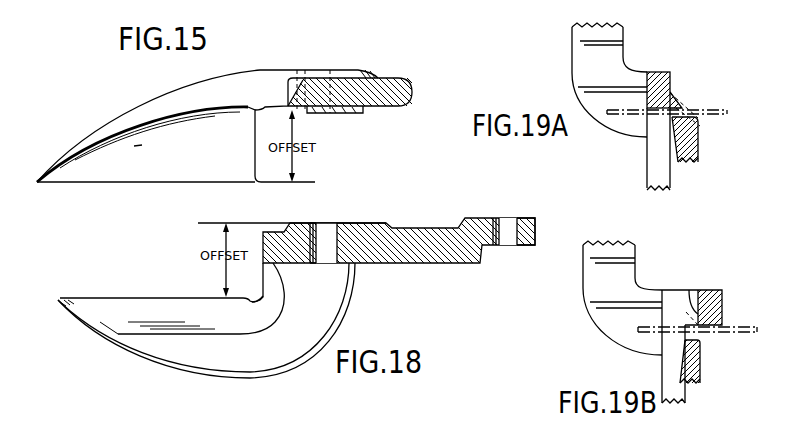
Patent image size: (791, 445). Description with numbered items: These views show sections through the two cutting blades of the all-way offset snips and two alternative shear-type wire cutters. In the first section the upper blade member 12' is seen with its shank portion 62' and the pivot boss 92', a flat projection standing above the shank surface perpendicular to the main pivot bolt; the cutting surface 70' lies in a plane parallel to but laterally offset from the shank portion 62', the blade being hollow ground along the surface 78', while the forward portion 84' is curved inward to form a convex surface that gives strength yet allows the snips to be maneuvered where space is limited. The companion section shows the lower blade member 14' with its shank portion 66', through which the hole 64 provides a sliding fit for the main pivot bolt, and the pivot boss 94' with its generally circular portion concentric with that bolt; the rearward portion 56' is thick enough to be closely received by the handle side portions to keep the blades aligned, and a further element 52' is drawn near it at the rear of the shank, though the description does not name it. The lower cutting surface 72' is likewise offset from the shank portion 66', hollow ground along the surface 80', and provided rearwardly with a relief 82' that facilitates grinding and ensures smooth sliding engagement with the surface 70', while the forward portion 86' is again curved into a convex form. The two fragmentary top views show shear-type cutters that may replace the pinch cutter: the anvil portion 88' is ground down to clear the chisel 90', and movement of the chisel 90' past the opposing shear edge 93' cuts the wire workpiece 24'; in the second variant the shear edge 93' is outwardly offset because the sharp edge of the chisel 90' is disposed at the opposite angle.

In FIG. 15, the upper blade member 12' is at (345, 68).
In FIG. 18, the lower blade member 14' is at (81, 333).
In FIG. 19A, the lower blade member 14' is at (584, 80).
In FIG. 19B, the lower blade member 14' is at (600, 298).
In FIG. 19A, the wire workpiece 24' is at (659, 129).
In FIG. 19B, the wire workpiece 24' is at (687, 351).
In FIG. 18, the fastener 52' is at (507, 218).
In FIG. 18, the rearward portion 56' is at (539, 218).
In FIG. 15, the shank portion 62' is at (284, 74).
In FIG. 18, the hole 64 is at (331, 222).
In FIG. 18, the shank portion 66' is at (398, 258).
In FIG. 15, the cutting surface 70' is at (146, 196).
In FIG. 18, the cutting surface 72' is at (172, 298).
In FIG. 15, the hollow ground surface 78' is at (176, 159).
In FIG. 18, the hollow ground surface 80' is at (157, 354).
In FIG. 18, the relief 82' is at (259, 309).
In FIG. 15, the forward portion 84' is at (207, 126).
In FIG. 18, the forward portion 86' is at (206, 322).
In FIG. 19A, the anvil portion 88' is at (665, 104).
In FIG. 19B, the anvil portion 88' is at (678, 337).
In FIG. 19A, the wedge portion 90' is at (665, 120).
In FIG. 19B, the wedge portion 90' is at (678, 337).
In FIG. 15, the pivot boss 92' is at (339, 121).
In FIG. 19A, the opposing shear edge 93' is at (665, 120).
In FIG. 19B, the opposing shear edge 93' is at (689, 289).
In FIG. 18, the pivot boss 94' is at (340, 207).